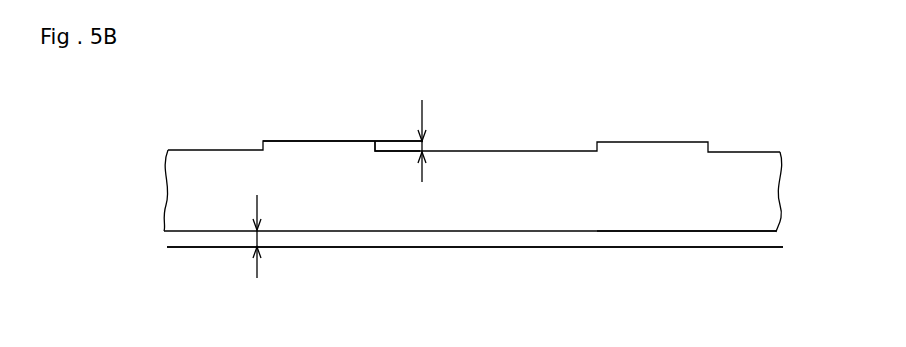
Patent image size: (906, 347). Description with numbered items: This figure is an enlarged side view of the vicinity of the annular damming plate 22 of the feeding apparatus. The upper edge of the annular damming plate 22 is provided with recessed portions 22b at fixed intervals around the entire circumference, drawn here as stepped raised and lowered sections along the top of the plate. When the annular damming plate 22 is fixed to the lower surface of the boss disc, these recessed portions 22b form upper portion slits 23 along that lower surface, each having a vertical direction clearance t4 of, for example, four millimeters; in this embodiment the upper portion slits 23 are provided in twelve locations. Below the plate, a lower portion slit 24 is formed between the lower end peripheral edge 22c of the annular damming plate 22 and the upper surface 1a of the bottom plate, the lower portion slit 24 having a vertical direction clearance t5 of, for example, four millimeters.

The annular damming plate 22 is at (681, 140).
The recessed portions 22b is at (537, 152).
The lower end peripheral edge 22c is at (650, 234).
The upper portion slits 23 is at (391, 148).
The lower portion slit 24 is at (400, 240).
The upper surface of the bottom plate 1a is at (564, 242).
The vertical direction clearance t4 is at (428, 146).
The vertical direction clearance t5 is at (260, 236).